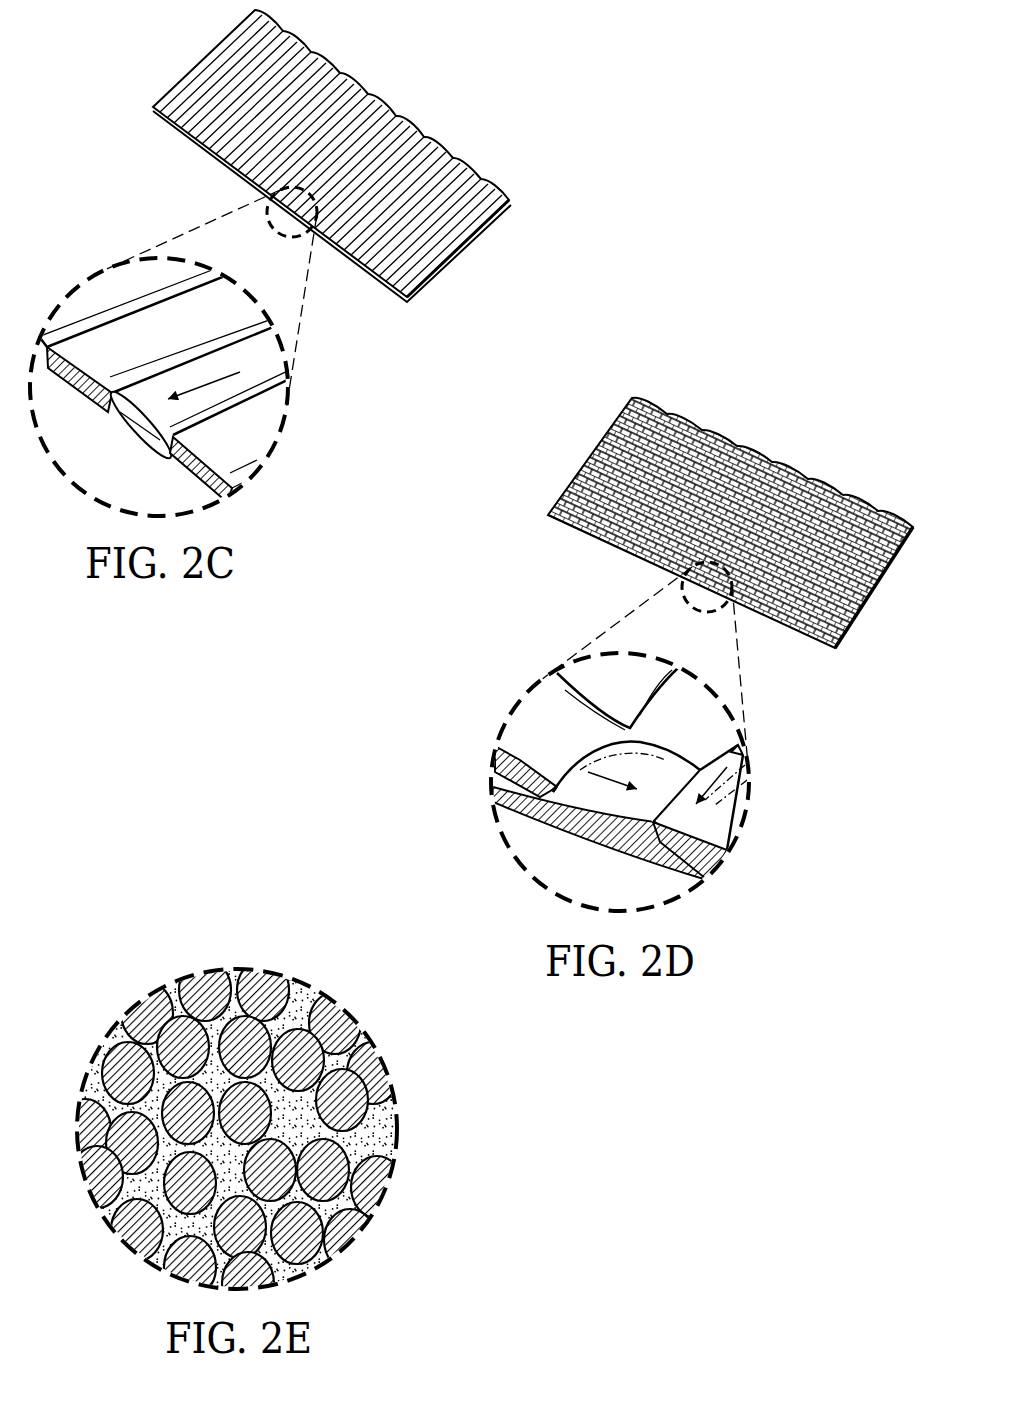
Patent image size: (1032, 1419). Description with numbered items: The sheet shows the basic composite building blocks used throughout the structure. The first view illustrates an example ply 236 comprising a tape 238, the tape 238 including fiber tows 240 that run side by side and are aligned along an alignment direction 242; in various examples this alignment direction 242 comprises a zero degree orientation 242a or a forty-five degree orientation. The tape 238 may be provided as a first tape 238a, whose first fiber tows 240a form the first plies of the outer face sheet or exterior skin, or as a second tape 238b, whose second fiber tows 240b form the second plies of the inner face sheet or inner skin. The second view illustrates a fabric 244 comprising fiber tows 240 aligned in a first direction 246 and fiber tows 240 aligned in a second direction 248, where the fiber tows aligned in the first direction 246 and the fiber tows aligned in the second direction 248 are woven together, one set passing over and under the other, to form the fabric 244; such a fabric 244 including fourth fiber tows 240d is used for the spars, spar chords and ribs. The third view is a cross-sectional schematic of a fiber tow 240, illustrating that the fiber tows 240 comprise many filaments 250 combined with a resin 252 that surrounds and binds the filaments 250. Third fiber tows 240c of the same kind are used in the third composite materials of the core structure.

In FIG. 2C, the ply 236 is at (492, 75).
In FIG. 2C, the tape 238 is at (198, 53).
In FIG. 2C, the first tape 238a is at (404, 156).
In FIG. 2C, the second tape 238b is at (492, 157).
In FIG. 2C, the fiber tows 240 is at (127, 412).
In FIG. 2D, the fiber tows 240 is at (720, 827).
In FIG. 2C, the alignment direction 242 is at (301, 398).
In FIG. 2C, the 0 degree orientation 242a is at (208, 383).
In FIG. 2D, the fabric 244 is at (585, 458).
In FIG. 2D, the first direction 246 is at (590, 752).
In FIG. 2D, the second direction 248 is at (727, 805).
In FIG. 2E, the filaments 250 is at (204, 987).
In FIG. 2E, the resin 252 is at (306, 991).
In FIG. 2E, the first fiber tows 240a is at (374, 1136).
In FIG. 2E, the second fiber tows 240b is at (374, 1136).
In FIG. 2E, the third fiber tows 240c is at (374, 1136).
In FIG. 2E, the fourth fiber tows 240d is at (399, 1178).